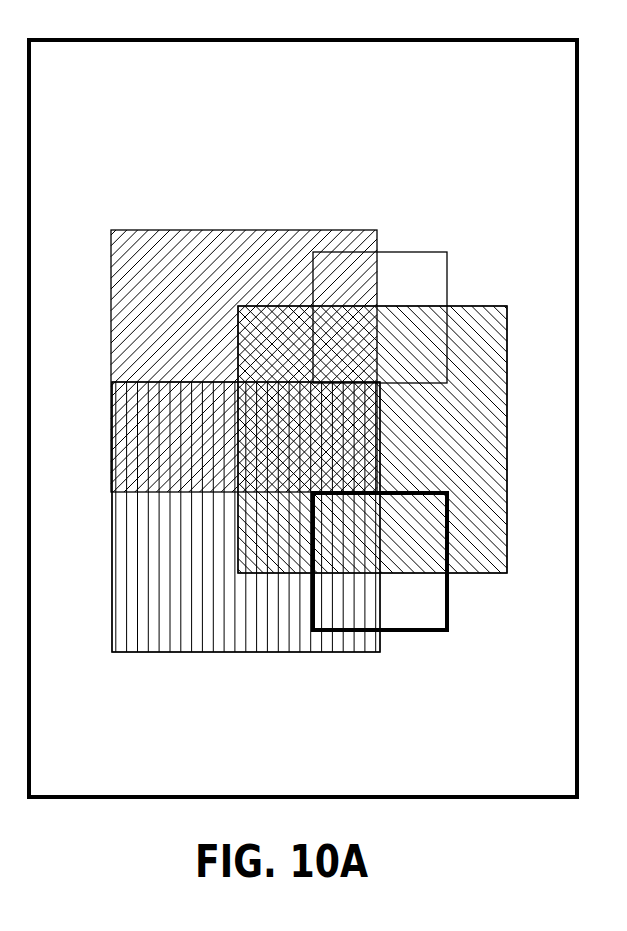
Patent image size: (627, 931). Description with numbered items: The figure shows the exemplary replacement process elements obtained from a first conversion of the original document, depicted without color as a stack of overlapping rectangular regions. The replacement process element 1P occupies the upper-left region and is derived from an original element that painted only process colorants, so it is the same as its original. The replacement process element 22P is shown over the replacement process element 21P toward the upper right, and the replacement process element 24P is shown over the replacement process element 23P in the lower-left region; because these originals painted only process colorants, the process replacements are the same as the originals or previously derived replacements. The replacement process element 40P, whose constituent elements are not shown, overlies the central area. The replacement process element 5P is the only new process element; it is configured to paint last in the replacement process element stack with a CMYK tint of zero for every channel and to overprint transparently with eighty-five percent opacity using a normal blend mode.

The replacement process element 1P is at (112, 230).
The replacement process element 22P is at (487, 306).
The replacement process element 21P is at (372, 342).
The replacement process element 24P is at (113, 652).
The replacement process element 23P is at (246, 573).
The replacement process element 40P is at (410, 252).
The replacement process element 5P is at (447, 632).